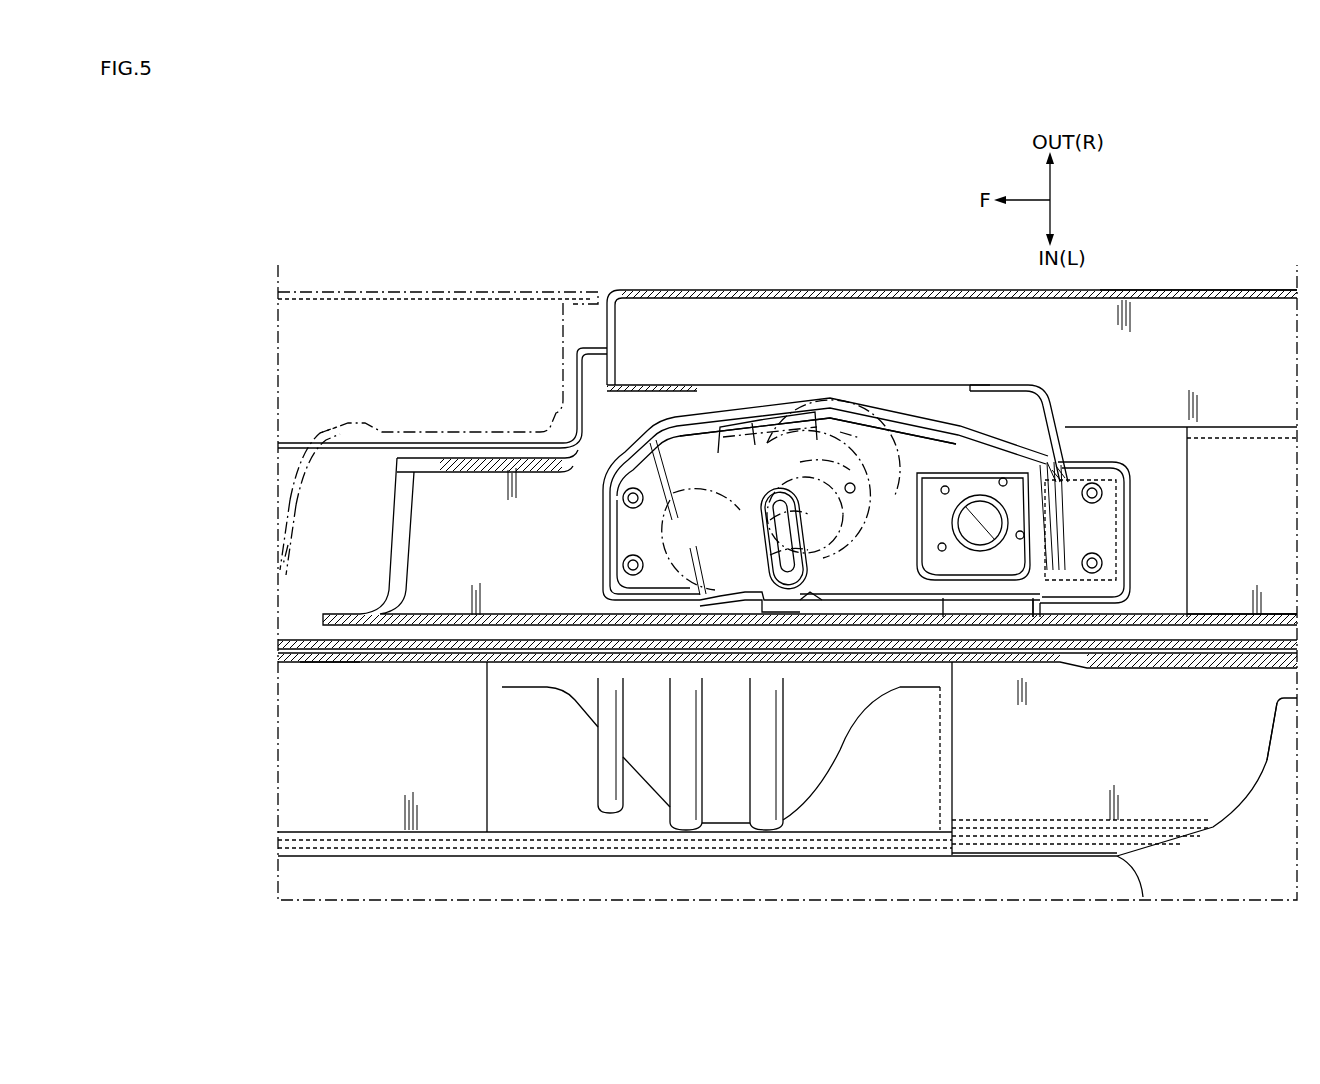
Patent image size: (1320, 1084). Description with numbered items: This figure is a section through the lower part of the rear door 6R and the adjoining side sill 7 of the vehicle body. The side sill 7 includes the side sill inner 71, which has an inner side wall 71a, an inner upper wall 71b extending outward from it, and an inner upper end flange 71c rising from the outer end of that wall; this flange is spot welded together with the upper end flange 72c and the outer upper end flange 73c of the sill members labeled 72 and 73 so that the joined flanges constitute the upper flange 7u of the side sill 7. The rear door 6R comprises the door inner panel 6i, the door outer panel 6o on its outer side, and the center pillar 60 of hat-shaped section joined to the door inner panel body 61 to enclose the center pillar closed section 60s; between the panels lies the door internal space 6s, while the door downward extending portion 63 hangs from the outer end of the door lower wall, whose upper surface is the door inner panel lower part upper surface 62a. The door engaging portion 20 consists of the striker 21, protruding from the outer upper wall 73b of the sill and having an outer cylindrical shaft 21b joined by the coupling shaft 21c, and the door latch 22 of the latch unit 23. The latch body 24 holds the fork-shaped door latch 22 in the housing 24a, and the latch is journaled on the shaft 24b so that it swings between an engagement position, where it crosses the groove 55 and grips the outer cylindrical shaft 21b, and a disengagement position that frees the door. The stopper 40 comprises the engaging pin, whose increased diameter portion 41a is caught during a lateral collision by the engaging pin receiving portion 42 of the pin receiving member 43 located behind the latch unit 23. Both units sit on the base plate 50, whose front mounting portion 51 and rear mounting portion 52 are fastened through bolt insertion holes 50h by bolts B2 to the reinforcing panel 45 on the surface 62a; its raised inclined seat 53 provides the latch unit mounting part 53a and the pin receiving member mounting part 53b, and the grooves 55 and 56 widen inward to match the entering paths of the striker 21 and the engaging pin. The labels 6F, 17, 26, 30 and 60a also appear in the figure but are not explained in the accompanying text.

The front floor panel 6F is at (437, 286).
The rear door 6R is at (772, 284).
The door outer panel 6o is at (847, 284).
The door internal space 6s is at (1060, 361).
The door inner panel 6i is at (1277, 608).
The side sill 7 is at (295, 438).
The upper flange 7u is at (325, 670).
The floor tunnel 17 is at (998, 900).
The door engaging portion 20 is at (832, 404).
The striker 21 is at (768, 536).
The outer cylindrical shaft 21b is at (765, 520).
The coupling shaft 21c is at (770, 556).
The door latch 22 is at (800, 452).
The latch unit 23 is at (732, 412).
The latch body 24 is at (884, 428).
The housing 24a is at (868, 430).
The shaft 24b is at (856, 484).
The spring 26 is at (751, 418).
The lower plate 30 is at (780, 600).
The stopper 40 is at (1052, 460).
The increased diameter portion 41a is at (1005, 478).
The engaging pin receiving portion 42 is at (940, 475).
The pin receiving member 43 is at (1054, 452).
The reinforcing panel 45 is at (1190, 470).
The base plate 50 is at (1136, 463).
The bolt insertion holes 50h is at (623, 498).
The front mounting portion 51 is at (608, 530).
The rear mounting portion 52 is at (1112, 520).
The inclined seat 53 is at (975, 448).
The latch unit mounting part 53a is at (806, 482).
The pin receiving member mounting part 53b is at (1030, 510).
The groove 55 is at (824, 600).
The groove 56 is at (965, 590).
The center pillar 60 is at (990, 379).
The seat bracket flange 60a is at (957, 385).
The center pillar closed section 60s is at (513, 551).
The door inner panel body 61 is at (1213, 614).
The door inner panel lower part upper surface 62a is at (1252, 440).
The door downward extending portion 63 is at (1222, 427).
The side sill inner 71 is at (1094, 862).
The inner side wall 71a is at (1053, 836).
The inner upper wall 71b is at (1255, 758).
The inner upper end flange 71c is at (300, 660).
The side sill 72 is at (487, 461).
The upper end flange 72c is at (300, 646).
The reinforcement bracket 73 is at (330, 436).
The outer upper wall 73b is at (290, 540).
The outer upper end flange 73c is at (300, 618).
The bolts B2 is at (622, 572).